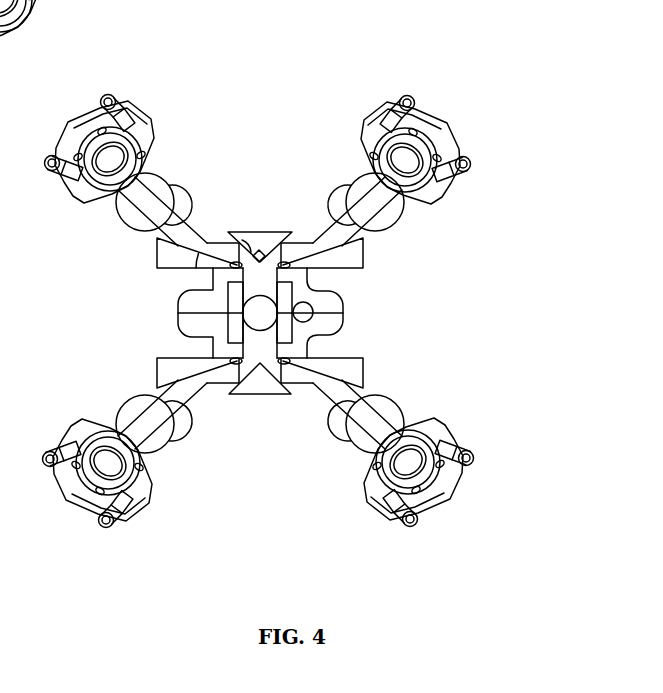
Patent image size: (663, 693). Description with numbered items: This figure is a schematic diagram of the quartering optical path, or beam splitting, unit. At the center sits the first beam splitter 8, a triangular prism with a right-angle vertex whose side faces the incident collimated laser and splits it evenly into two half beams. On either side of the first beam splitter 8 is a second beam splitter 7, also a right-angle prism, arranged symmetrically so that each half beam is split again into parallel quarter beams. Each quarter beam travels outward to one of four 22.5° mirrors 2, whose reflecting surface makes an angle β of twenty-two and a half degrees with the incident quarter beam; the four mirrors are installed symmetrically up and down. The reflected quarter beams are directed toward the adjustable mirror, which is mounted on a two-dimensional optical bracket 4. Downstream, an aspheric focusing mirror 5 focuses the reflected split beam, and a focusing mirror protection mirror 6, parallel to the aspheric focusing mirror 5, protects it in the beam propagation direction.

The 22.5° mirror 2 is at (350, 258).
The two-dimensional optical bracket 4 is at (433, 140).
The aspheric focusing mirror 5 is at (385, 213).
The focusing mirror protection mirror 6 is at (368, 233).
The second beam splitter 7 is at (262, 380).
The first beam splitter 8 is at (283, 328).